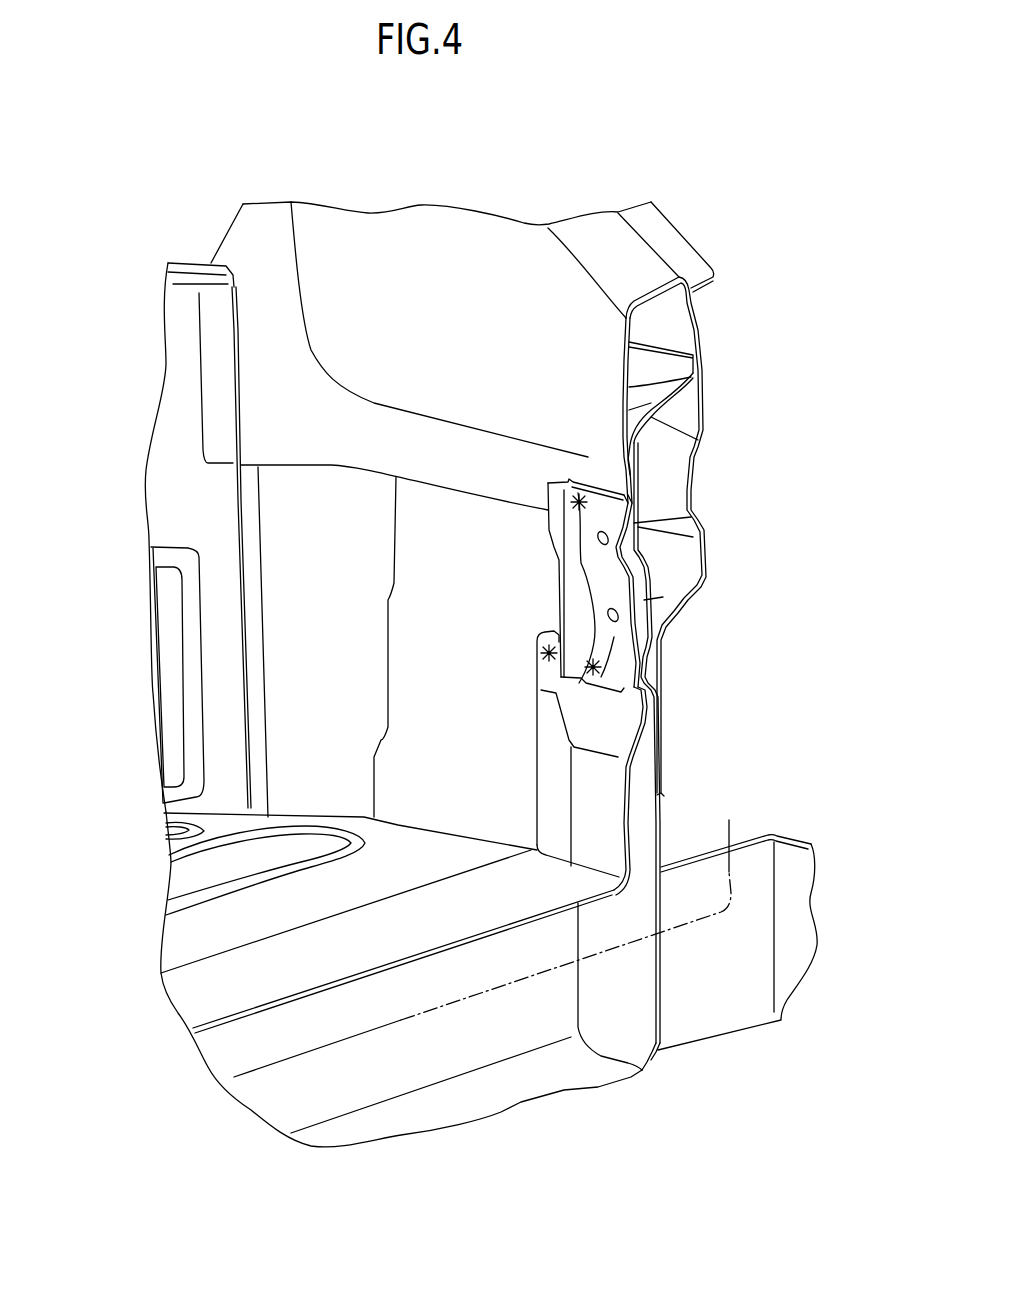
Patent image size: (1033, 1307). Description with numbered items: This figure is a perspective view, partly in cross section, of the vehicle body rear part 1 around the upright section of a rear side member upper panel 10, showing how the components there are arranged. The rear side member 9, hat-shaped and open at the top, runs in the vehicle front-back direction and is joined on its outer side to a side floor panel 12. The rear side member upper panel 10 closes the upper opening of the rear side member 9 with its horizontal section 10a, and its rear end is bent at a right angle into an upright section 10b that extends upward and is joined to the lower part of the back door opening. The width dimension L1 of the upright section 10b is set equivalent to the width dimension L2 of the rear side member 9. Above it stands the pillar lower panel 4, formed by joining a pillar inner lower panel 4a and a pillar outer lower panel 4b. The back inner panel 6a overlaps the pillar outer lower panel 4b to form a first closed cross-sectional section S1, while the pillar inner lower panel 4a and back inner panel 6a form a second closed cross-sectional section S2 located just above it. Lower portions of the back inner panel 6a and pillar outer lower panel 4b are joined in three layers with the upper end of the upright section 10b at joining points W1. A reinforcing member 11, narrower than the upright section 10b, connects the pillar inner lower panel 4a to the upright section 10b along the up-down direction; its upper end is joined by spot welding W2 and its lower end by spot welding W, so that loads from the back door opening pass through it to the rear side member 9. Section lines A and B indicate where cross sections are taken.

The vehicle body rear part 1 is at (428, 180).
The pillar lower panel 4 is at (689, 228).
The pillar inner lower panel 4a is at (622, 345).
The pillar outer lower panel 4b is at (700, 489).
The back inner panel 6a is at (703, 413).
The rear side member 9 is at (397, 1060).
The rear side member upper panel 10 is at (163, 1010).
The horizontal section 10a is at (403, 903).
The upright section 10b is at (548, 768).
The reinforcing member 11 is at (555, 540).
The side floor panel 12 is at (197, 868).
The spot welding W is at (592, 677).
The joining point (spot welding) W1 is at (542, 653).
The spot welding W2 is at (574, 500).
The first closed cross-sectional section S1 is at (682, 492).
The second closed cross-sectional section S2 is at (682, 338).
The width dimension of the upright section L1 is at (716, 873).
The width dimension of the rear side member L2 is at (292, 929).
The section line A is at (543, 242).
The section line B is at (581, 247).